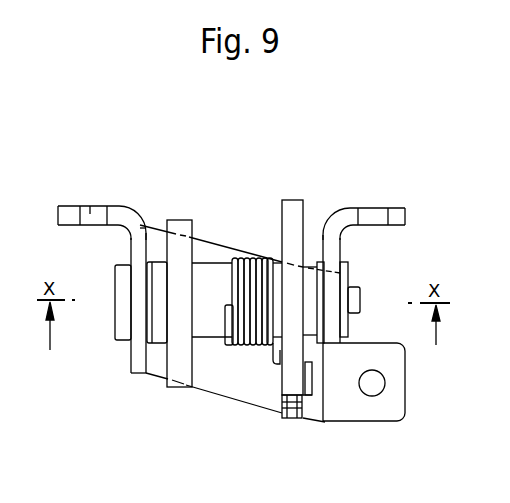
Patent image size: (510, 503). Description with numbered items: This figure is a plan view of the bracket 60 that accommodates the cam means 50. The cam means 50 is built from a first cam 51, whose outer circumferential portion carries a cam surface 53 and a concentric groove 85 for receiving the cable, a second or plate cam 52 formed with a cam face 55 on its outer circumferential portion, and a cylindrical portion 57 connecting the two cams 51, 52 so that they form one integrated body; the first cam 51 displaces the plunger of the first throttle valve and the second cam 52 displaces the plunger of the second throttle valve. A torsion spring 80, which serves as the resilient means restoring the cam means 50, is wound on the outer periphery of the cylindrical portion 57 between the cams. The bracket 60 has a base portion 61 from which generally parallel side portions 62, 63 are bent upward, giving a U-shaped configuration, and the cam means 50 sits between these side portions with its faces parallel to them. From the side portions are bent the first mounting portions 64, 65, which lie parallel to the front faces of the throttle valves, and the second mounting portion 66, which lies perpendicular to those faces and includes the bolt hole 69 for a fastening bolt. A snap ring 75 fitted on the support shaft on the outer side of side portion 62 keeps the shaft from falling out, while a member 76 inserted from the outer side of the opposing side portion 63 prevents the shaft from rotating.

The cam means 50 is at (237, 195).
The first cam 51 is at (283, 380).
The second cam 52 is at (175, 380).
The cam surface 53 is at (293, 210).
The cam face 55 is at (178, 220).
The cylindrical portion 57 is at (228, 300).
The bracket 60 is at (240, 337).
The base portion 61 is at (225, 380).
The side portion 62 is at (138, 365).
The side portion 63 is at (333, 327).
The first mounting portion 64 is at (375, 213).
The first mounting portion 65 is at (90, 207).
The second mounting portion 66 is at (398, 390).
The bolt hole 69 is at (373, 396).
The snap ring 75 is at (350, 277).
The member 76 is at (120, 290).
The torsion spring 80 is at (259, 262).
The concentric groove 85 is at (290, 412).